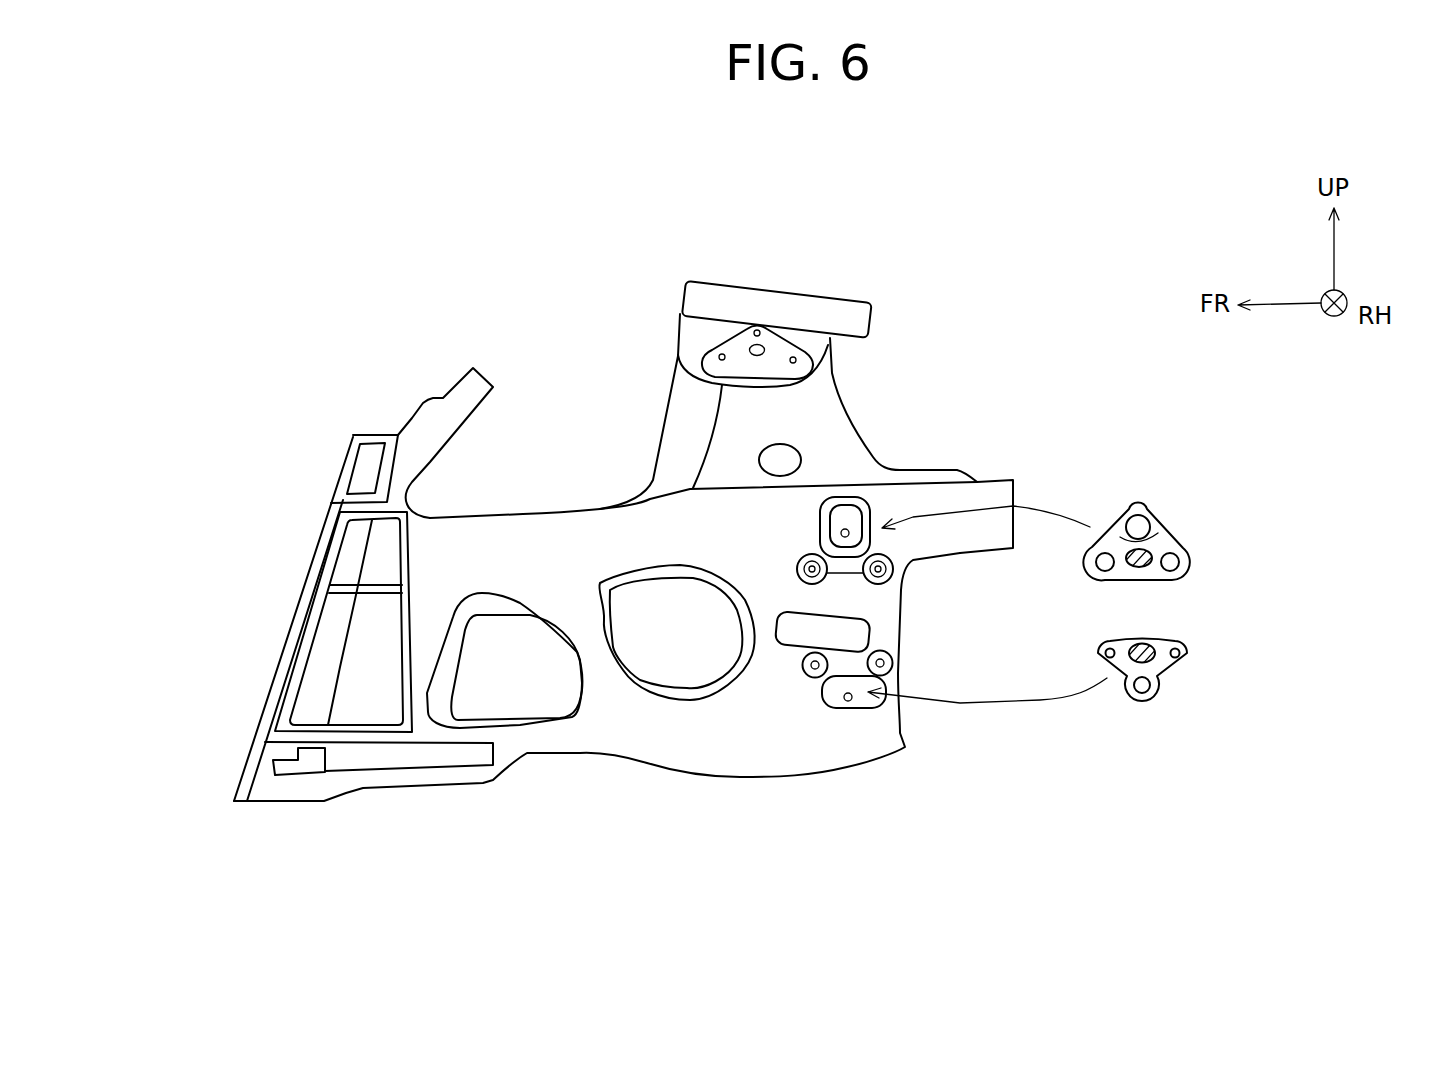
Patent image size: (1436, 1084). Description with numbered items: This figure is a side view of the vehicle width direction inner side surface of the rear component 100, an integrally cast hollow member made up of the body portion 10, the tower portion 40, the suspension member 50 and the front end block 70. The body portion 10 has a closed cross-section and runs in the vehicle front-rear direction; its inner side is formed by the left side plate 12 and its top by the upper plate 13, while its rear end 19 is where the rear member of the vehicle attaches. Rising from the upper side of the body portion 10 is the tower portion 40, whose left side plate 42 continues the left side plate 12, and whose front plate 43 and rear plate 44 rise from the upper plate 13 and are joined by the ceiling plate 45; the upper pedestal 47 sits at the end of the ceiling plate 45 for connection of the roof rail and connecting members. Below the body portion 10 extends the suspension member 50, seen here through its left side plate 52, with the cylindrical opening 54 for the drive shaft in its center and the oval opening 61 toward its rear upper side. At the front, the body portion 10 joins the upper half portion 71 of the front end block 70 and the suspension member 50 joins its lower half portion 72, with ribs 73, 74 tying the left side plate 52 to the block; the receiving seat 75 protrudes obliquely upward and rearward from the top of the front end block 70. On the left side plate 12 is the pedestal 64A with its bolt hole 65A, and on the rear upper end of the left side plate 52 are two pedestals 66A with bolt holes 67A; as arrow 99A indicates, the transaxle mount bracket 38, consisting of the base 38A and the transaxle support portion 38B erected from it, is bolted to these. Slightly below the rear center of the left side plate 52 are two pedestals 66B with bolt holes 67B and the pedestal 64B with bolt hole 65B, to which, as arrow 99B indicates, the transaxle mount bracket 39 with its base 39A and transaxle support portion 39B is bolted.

The rear component 100 is at (544, 578).
The body portion 10 is at (983, 467).
The left side plate 12 is at (973, 537).
The upper plate 13 is at (1003, 477).
The rear end 19 is at (1015, 495).
The transaxle mount bracket 38 is at (1168, 518).
The base 38A is at (1150, 510).
The transaxle support portion 38B is at (1142, 570).
The transaxle mount bracket 39 is at (1167, 670).
The base 39A is at (1157, 693).
The transaxle support portion 39B is at (1148, 648).
The tower portion 40 is at (793, 336).
The left side plate 42 is at (760, 427).
The front plate 43 is at (687, 423).
The rear plate 44 is at (835, 407).
The ceiling plate 45 is at (700, 335).
The upper pedestal 47 is at (782, 287).
The suspension member 50 is at (700, 785).
The left side plate 52 is at (673, 723).
The cylindrical opening 54 is at (650, 657).
The oval opening 61 is at (795, 628).
The pedestal 64A is at (855, 500).
The bolt hole 65A is at (848, 530).
The pedestal 66A is at (893, 570).
The bolt hole 67A is at (882, 572).
The pedestal 64B is at (870, 693).
The bolt hole 65B is at (860, 700).
The pedestal 66B is at (848, 703).
The bolt hole 67B is at (810, 660).
The front end block 70 is at (298, 556).
The upper half portion 71 is at (340, 502).
The lower half portion 72 is at (269, 705).
The rib 73 is at (414, 605).
The rib 74 is at (377, 596).
The receiving seat 75 is at (408, 412).
The arrow 99A is at (1104, 486).
The arrow 99B is at (1102, 713).